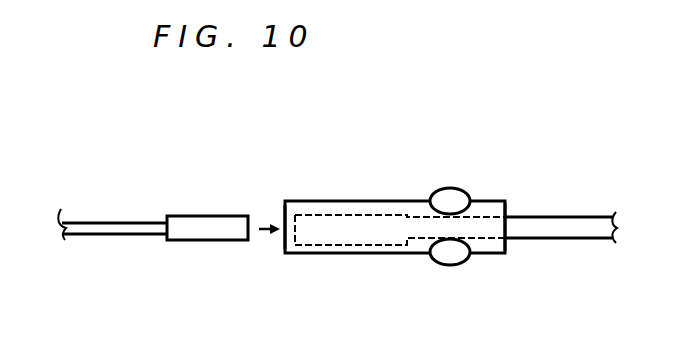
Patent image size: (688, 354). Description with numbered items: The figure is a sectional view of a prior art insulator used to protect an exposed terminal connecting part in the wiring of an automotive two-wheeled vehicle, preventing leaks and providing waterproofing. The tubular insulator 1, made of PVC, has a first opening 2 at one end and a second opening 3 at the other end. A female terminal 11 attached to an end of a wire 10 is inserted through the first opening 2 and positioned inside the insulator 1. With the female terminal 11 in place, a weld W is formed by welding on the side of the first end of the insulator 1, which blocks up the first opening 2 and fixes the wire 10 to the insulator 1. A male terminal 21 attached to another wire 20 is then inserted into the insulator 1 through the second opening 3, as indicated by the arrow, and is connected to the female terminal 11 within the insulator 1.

The tubular insulator 1 is at (325, 173).
The first opening 2 is at (506, 208).
The second opening 3 is at (283, 222).
The wire 10 is at (552, 228).
The female terminal 11 is at (333, 240).
The wire 20 is at (107, 228).
The male terminal 21 is at (204, 232).
The weld W is at (443, 197).